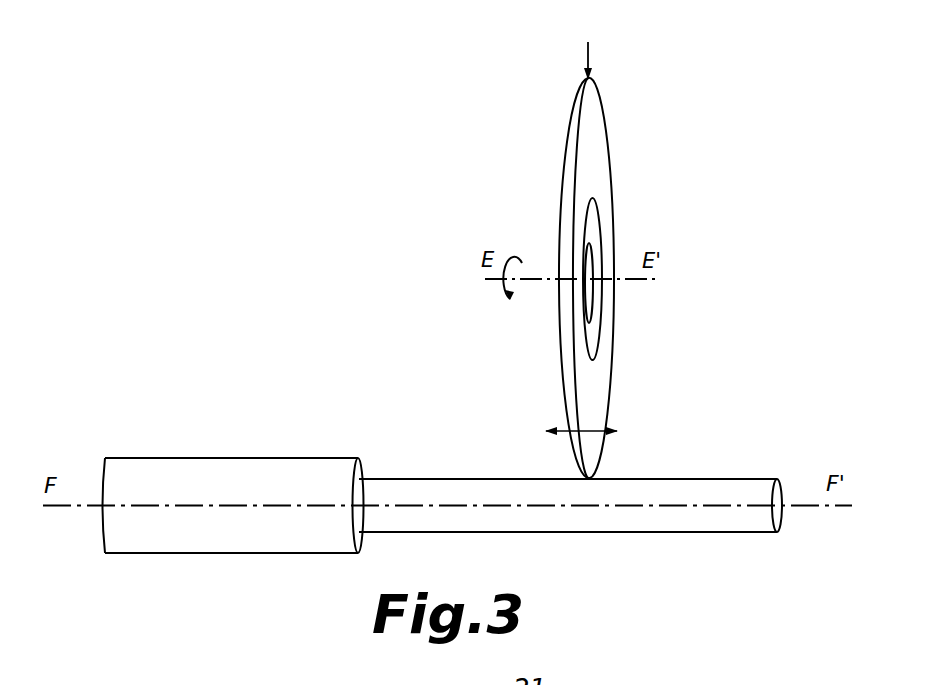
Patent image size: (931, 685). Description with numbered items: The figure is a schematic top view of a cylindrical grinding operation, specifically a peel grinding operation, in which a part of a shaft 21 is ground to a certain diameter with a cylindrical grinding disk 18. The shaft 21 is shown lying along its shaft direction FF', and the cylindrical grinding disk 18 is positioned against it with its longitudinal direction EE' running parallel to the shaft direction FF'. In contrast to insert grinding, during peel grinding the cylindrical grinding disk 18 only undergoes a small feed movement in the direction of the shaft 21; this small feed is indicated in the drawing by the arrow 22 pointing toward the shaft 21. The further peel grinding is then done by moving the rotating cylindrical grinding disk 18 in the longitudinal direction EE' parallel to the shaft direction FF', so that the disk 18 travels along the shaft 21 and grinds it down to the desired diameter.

The cylindrical grinding disk 18 is at (597, 161).
The shaft 21 is at (267, 530).
The feed direction arrow 22 is at (586, 47).